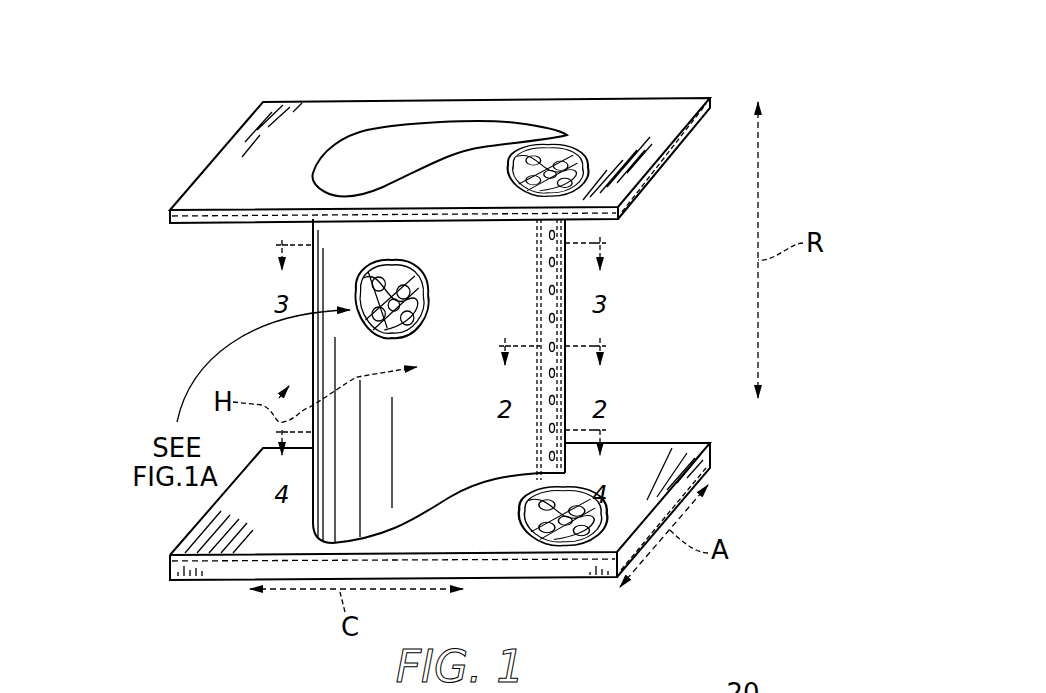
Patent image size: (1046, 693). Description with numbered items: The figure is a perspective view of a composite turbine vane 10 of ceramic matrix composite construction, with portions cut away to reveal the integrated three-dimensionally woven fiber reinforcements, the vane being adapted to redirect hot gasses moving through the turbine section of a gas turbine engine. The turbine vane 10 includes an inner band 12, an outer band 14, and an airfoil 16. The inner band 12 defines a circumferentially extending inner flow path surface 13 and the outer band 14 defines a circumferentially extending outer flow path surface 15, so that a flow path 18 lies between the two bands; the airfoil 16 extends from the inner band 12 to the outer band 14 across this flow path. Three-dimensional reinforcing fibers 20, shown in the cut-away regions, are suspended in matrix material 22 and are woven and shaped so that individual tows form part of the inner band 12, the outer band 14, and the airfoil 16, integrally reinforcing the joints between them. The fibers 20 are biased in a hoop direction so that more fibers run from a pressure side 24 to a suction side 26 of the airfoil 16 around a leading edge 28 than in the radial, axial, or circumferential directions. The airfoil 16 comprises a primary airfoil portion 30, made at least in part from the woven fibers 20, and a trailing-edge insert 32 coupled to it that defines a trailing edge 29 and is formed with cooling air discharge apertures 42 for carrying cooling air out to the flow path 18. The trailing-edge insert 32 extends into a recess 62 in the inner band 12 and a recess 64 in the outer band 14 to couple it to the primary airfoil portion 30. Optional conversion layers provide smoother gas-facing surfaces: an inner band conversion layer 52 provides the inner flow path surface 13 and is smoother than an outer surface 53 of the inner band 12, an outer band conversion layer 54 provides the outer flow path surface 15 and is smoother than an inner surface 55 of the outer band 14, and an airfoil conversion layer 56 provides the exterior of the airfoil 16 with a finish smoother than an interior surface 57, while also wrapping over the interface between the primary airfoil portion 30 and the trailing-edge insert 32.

The turbine vane 10 is at (130, 180).
The inner band 12 is at (158, 557).
The inner flow path surface 13 is at (658, 448).
The outer band 14 is at (220, 143).
The outer flow path surface 15 is at (677, 153).
The airfoil 16 is at (265, 288).
The flow path 18 is at (177, 373).
The three-dimensional reinforcing fibers 20 is at (392, 260).
The matrix material 22 is at (433, 283).
The pressure side 24 is at (448, 485).
The suction side 26 is at (310, 338).
The leading edge 28 is at (333, 513).
The trailing edge 29 is at (558, 316).
The primary airfoil portion 30 is at (512, 277).
The trailing-edge insert 32 is at (568, 277).
The cooling air discharge apertures 42 is at (558, 318).
The inner band conversion layer 52 is at (232, 543).
The outer surface of the inner band 53 is at (563, 600).
The outer band conversion layer 54 is at (233, 228).
The inner surface of the outer band 55 is at (605, 110).
The airfoil conversion layer 56 is at (363, 355).
The interior surface of the airfoil 57 is at (398, 143).
The recess in the inner band 62 is at (540, 487).
The recess in the outer band 64 is at (527, 233).